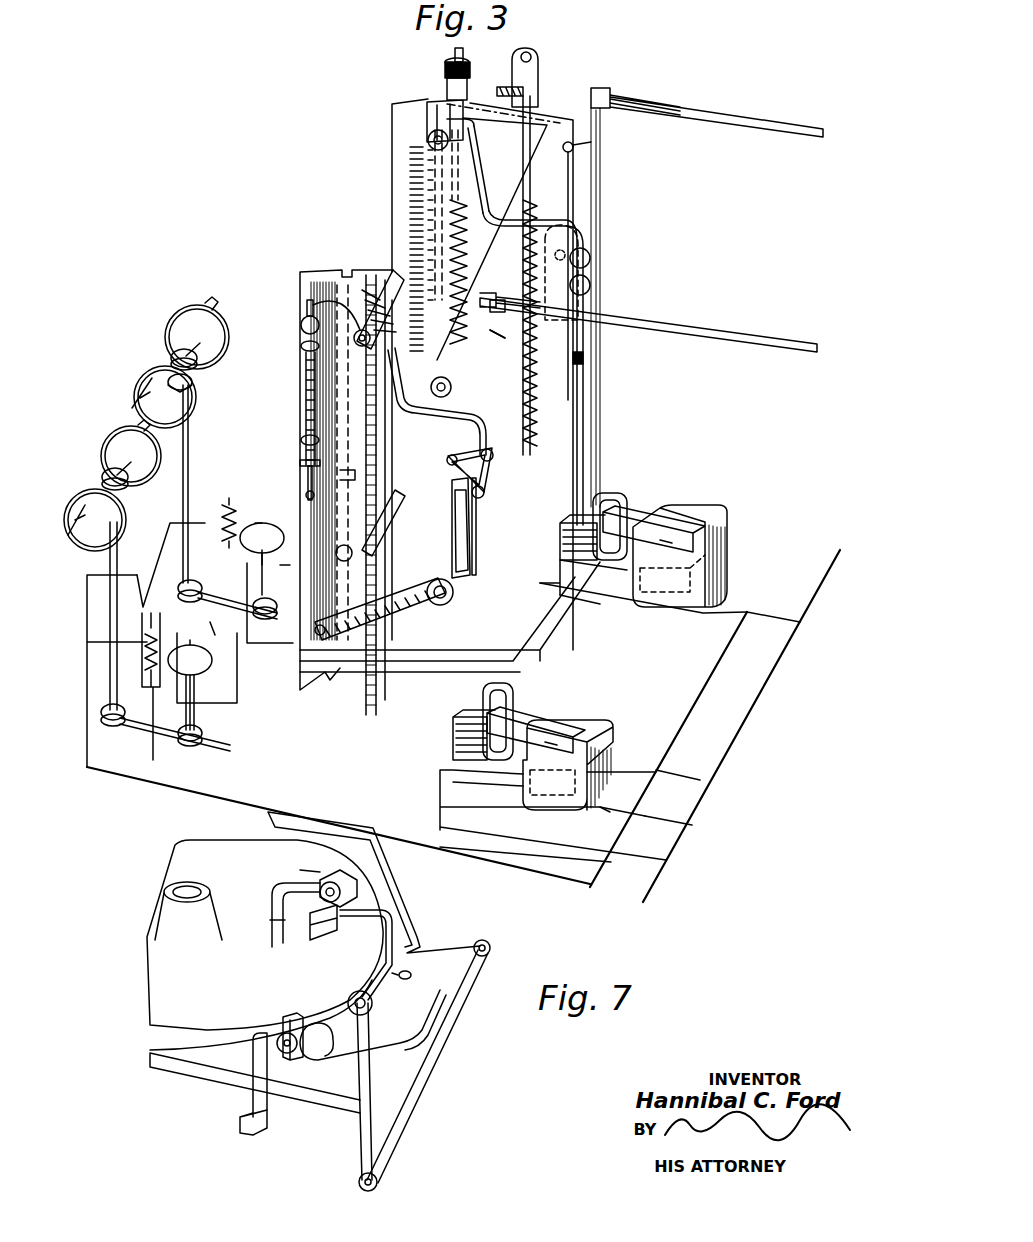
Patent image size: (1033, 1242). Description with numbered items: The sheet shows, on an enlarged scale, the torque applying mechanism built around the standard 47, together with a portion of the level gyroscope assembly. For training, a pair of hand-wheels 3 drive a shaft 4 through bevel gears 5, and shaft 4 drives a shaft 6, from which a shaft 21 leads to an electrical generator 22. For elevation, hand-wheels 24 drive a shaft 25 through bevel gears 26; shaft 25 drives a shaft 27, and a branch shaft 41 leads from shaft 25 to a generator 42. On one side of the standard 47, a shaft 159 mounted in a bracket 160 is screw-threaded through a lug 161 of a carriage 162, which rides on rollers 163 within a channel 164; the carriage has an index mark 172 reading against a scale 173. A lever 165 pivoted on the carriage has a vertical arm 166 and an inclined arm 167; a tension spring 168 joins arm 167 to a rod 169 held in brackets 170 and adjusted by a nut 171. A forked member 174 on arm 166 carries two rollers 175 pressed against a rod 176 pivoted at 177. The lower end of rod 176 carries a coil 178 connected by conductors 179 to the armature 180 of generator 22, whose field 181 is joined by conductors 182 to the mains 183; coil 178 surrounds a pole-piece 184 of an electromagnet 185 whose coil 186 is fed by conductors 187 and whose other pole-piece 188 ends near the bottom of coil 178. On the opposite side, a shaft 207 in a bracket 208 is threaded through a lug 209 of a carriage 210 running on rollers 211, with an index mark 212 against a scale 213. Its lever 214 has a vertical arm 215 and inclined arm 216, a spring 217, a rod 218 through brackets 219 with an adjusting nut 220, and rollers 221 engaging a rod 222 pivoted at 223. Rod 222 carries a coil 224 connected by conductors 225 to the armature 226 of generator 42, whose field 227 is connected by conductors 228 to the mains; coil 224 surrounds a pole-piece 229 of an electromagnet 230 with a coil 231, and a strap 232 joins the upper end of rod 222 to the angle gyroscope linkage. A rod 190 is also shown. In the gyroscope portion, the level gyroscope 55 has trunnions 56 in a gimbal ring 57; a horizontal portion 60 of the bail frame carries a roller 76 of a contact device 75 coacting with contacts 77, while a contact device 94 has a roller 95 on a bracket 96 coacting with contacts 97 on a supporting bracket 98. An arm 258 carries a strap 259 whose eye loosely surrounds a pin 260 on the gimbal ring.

In FIG. 3, the hand-wheels 3 is at (108, 435).
In FIG. 3, the shaft 4 is at (115, 580).
In FIG. 3, the bevel gears 5 is at (128, 495).
In FIG. 3, the shaft 6 is at (145, 735).
In FIG. 3, the shaft 21 is at (196, 712).
In FIG. 3, the electrical generator 22 is at (172, 650).
In FIG. 3, the hand-wheels 24 is at (175, 312).
In FIG. 3, the shaft 25 is at (189, 432).
In FIG. 3, the bevel gears 26 is at (197, 383).
In FIG. 3, the shaft 27 is at (215, 640).
In FIG. 3, the branch shaft 41 is at (262, 585).
In FIG. 3, the generator 42 is at (253, 520).
In FIG. 3, the standard 47 is at (400, 100).
In FIG. 3, the shaft 159 is at (372, 435).
In FIG. 3, the bracket 160 is at (366, 272).
In FIG. 3, the lug 161 is at (380, 500).
In FIG. 3, the carriage 162 is at (305, 385).
In FIG. 3, the rollers 163 is at (310, 305).
In FIG. 3, the channel 164 is at (325, 268).
In FIG. 3, the lever 165 is at (454, 588).
In FIG. 3, the vertical arm 166 is at (468, 535).
In FIG. 3, the inclined arm 167 is at (405, 615).
In FIG. 3, the tension spring 168 is at (270, 520).
In FIG. 3, the rod 169 is at (306, 484).
In FIG. 3, the brackets 170 is at (300, 348).
In FIG. 3, the nut 171 is at (300, 325).
In FIG. 3, the index mark 172 is at (345, 470).
In FIG. 3, the scale 173 is at (298, 462).
In FIG. 3, the forked member 174 is at (475, 470).
In FIG. 3, the rollers 175 is at (493, 455).
In FIG. 3, the rod 176 is at (478, 490).
In FIG. 3, the pivot 177 is at (475, 330).
In FIG. 3, the coil 178 is at (508, 700).
In FIG. 3, the conductors 179 is at (420, 662).
In FIG. 3, the armature 180 is at (190, 685).
In FIG. 3, the field 181 is at (158, 640).
In FIG. 3, the conductors 182 is at (250, 797).
In FIG. 3, the mains 183 is at (752, 709).
In FIG. 3, the pole-piece 184 is at (530, 718).
In FIG. 3, the electromagnet 185 is at (603, 745).
In FIG. 3, the coil 186 is at (612, 735).
In FIG. 3, the conductors 187 is at (625, 810).
In FIG. 3, the pole-piece 188 is at (440, 770).
In FIG. 3, the rod 190 is at (757, 340).
In FIG. 3, the shaft 207 is at (532, 94).
In FIG. 3, the bracket 208 is at (540, 62).
In FIG. 3, the lug 209 is at (550, 262).
In FIG. 3, the carriage 210 is at (552, 222).
In FIG. 3, the rollers 211 is at (428, 138).
In FIG. 3, the index mark 212 is at (420, 258).
In FIG. 3, the scale 213 is at (403, 222).
In FIG. 3, the lever 214 is at (585, 360).
In FIG. 3, the vertical arm 215 is at (590, 335).
In FIG. 3, the inclined arm 216 is at (537, 447).
In FIG. 3, the spring 217 is at (467, 245).
In FIG. 3, the rod 218 is at (460, 217).
In FIG. 3, the brackets 219 is at (442, 86).
In FIG. 3, the adjusting nut 220 is at (466, 60).
In FIG. 3, the rollers 221 is at (592, 283).
In FIG. 3, the rod 222 is at (600, 290).
In FIG. 3, the pivot 223 is at (566, 158).
In FIG. 3, the coil 224 is at (600, 500).
In FIG. 3, the conductors 225 is at (590, 600).
In FIG. 3, the armature 226 is at (266, 583).
In FIG. 3, the field 227 is at (220, 525).
In FIG. 3, the conductors 228 is at (160, 580).
In FIG. 3, the pole-piece 229 is at (640, 515).
In FIG. 3, the electromagnet 230 is at (714, 547).
In FIG. 3, the coil 231 is at (720, 530).
In FIG. 3, the strap 232 is at (775, 118).
In FIG. 7, the level gyroscope 55 is at (265, 945).
In FIG. 7, the trunnions 56 is at (410, 972).
In FIG. 7, the gimbal ring 57 is at (398, 868).
In FIG. 7, the horizontal portion 60 is at (380, 1068).
In FIG. 7, the contact device 75 is at (234, 1106).
In FIG. 7, the roller 76 is at (280, 1033).
In FIG. 7, the contacts 77 is at (290, 1058).
In FIG. 7, the contact device 94 is at (308, 869).
In FIG. 7, the roller 95 is at (329, 880).
In FIG. 7, the bracket 96 is at (302, 901).
In FIG. 7, the contacts 97 is at (348, 872).
In FIG. 7, the supporting bracket 98 is at (375, 910).
In FIG. 7, the arm 258 is at (430, 1056).
In FIG. 7, the strap 259 is at (357, 1140).
In FIG. 7, the pin 260 is at (350, 998).